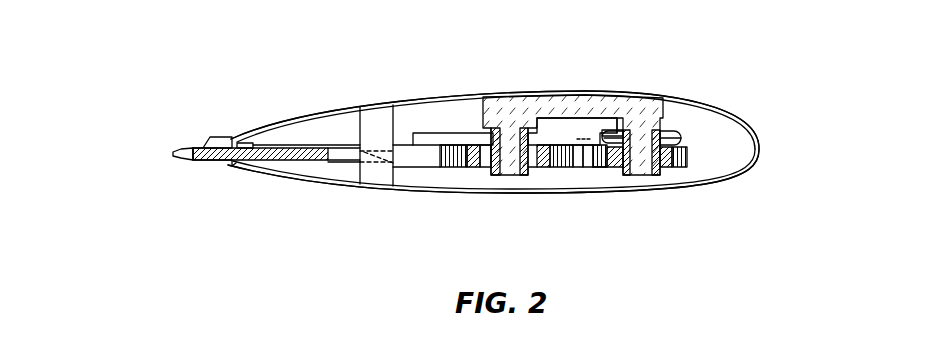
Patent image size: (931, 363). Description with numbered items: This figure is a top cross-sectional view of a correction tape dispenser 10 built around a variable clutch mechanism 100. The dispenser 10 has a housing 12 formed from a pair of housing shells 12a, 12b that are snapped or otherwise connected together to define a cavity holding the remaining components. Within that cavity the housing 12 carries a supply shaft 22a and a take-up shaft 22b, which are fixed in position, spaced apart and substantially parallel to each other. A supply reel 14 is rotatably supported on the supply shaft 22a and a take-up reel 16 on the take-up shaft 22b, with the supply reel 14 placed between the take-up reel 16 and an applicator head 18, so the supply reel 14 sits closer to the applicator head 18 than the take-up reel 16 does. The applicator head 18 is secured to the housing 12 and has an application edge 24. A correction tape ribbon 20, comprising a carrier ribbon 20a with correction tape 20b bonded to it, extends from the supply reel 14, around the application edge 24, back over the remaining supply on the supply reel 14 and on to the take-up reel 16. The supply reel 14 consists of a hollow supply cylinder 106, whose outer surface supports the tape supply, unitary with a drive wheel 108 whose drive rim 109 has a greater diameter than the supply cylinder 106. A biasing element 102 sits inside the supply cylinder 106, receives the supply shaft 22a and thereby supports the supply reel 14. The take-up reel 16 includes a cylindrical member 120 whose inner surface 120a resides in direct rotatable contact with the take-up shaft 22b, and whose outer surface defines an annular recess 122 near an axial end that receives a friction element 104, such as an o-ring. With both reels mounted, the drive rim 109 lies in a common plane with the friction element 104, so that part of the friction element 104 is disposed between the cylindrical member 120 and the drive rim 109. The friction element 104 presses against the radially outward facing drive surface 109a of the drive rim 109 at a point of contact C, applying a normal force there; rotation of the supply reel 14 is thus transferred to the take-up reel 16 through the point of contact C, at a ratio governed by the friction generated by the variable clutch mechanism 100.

The correction tape dispenser 10 is at (720, 67).
The housing 12 is at (747, 172).
The housing shell 12a is at (267, 127).
The housing shell 12b is at (272, 177).
The supply reel 14 is at (465, 124).
The take-up reel 16 is at (708, 104).
The applicator head 18 is at (213, 164).
The correction tape ribbon 20 is at (346, 166).
The carrier ribbon 20a is at (398, 170).
The correction tape 20b is at (338, 165).
The supply shaft 22a is at (497, 128).
The take-up shaft 22b is at (634, 128).
The application edge 24 is at (167, 150).
The variable clutch mechanism 100 is at (541, 184).
The biasing element 102 is at (483, 170).
The friction element 104 is at (628, 170).
The supply cylinder 106 is at (472, 170).
The drive wheel 108 is at (549, 116).
The drive rim 109 is at (427, 132).
The drive surface 109a is at (584, 124).
The cylindrical member 120 is at (662, 172).
The inner surface 120a is at (668, 130).
The annular recess 122 is at (694, 170).
The point of contact C is at (600, 170).